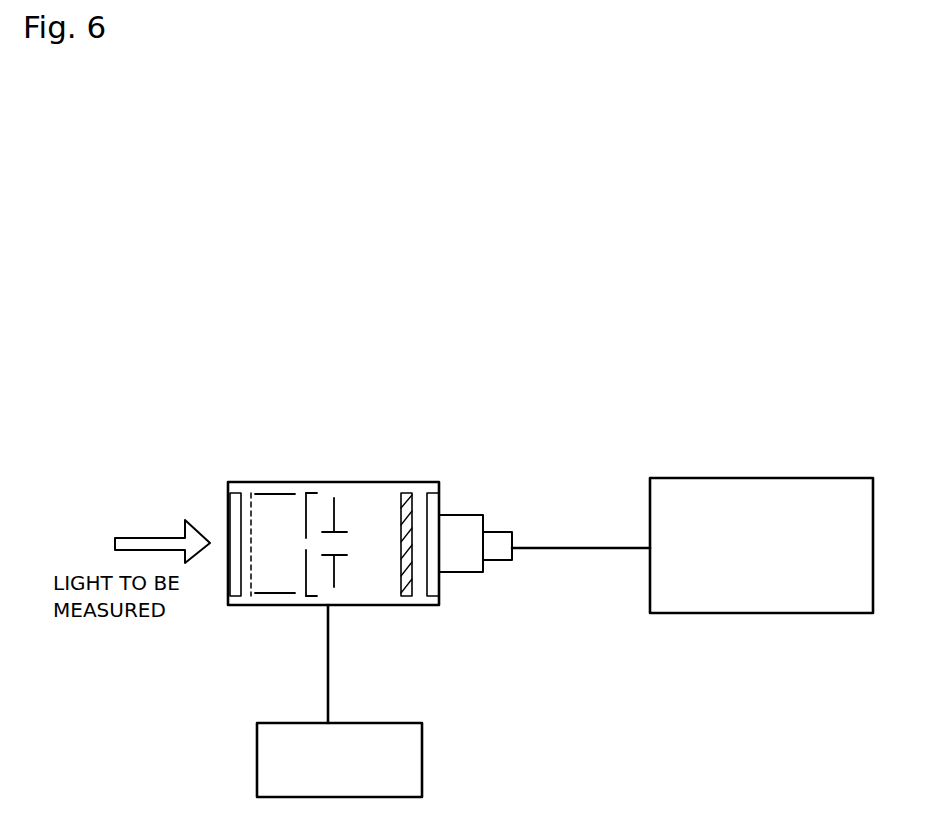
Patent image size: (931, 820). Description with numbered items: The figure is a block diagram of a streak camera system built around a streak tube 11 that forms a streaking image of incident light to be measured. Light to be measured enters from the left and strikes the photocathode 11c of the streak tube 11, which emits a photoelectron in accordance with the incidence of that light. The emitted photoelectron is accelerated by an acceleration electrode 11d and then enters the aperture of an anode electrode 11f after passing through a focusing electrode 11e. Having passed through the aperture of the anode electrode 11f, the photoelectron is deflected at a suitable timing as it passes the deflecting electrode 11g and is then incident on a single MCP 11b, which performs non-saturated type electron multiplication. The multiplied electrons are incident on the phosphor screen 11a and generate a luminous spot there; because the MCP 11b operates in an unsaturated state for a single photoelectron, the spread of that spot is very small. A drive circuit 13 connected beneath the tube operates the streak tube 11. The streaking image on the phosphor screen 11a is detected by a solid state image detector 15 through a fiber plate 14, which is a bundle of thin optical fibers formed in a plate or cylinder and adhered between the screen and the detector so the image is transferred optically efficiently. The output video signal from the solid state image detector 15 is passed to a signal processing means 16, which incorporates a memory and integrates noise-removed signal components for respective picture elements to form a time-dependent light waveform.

The streak tube 11 is at (336, 482).
The phosphor screen 11a is at (440, 494).
The MCP 11b is at (401, 596).
The photocathode 11c is at (243, 482).
The acceleration electrode 11d is at (253, 494).
The focusing electrode 11e is at (256, 592).
The anode electrode 11f is at (307, 597).
The deflecting electrode 11g is at (338, 587).
The drive circuit 13 is at (422, 763).
The fiber plate 14 is at (455, 572).
The solid state image detector 15 is at (512, 546).
The signal processing means 16 is at (773, 478).